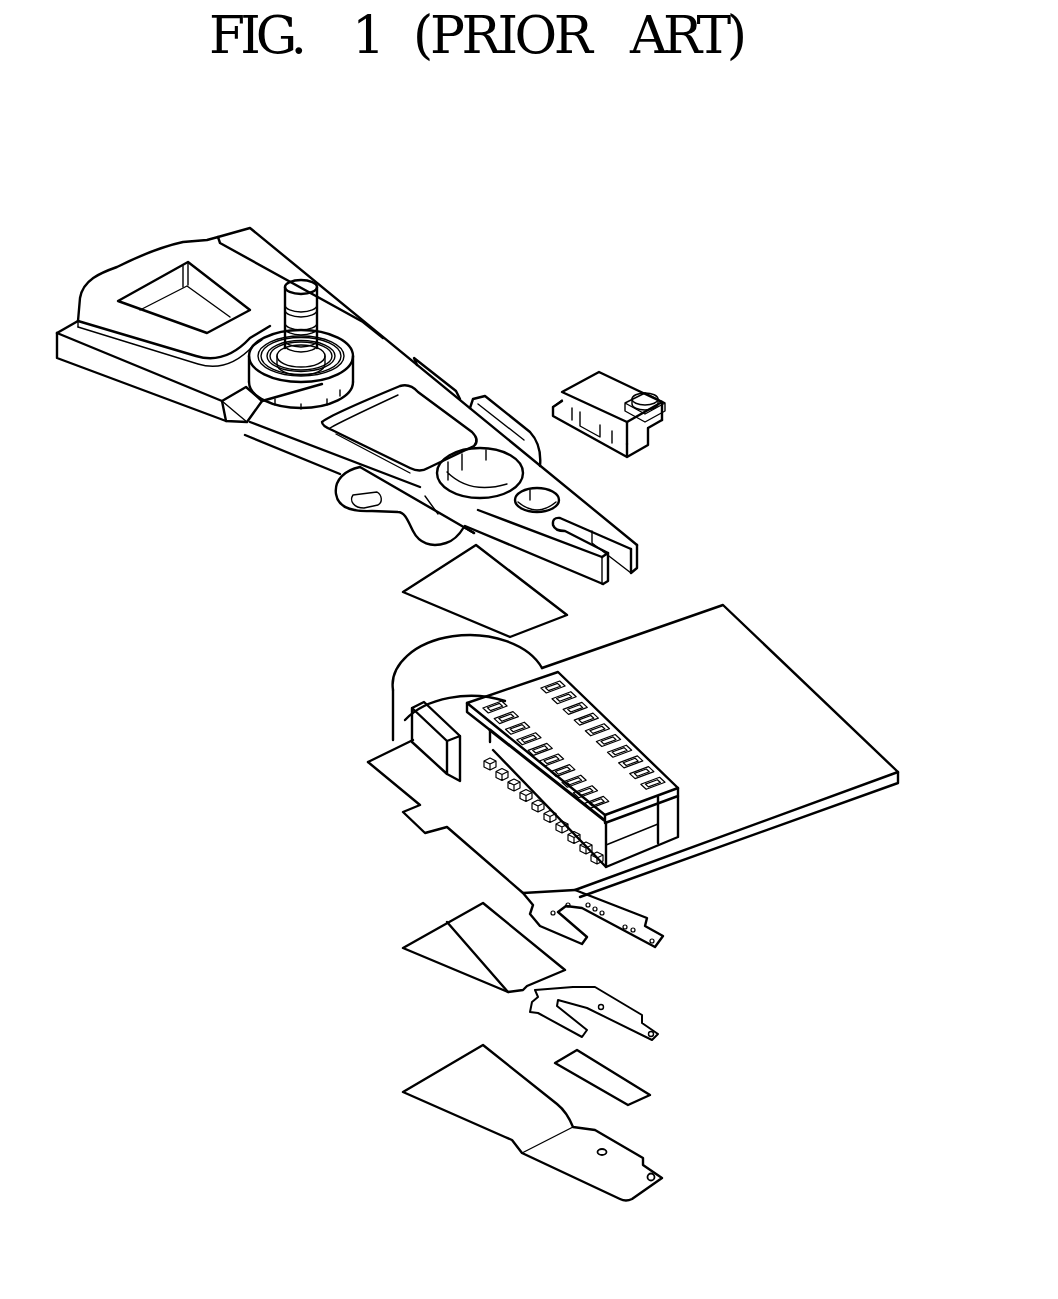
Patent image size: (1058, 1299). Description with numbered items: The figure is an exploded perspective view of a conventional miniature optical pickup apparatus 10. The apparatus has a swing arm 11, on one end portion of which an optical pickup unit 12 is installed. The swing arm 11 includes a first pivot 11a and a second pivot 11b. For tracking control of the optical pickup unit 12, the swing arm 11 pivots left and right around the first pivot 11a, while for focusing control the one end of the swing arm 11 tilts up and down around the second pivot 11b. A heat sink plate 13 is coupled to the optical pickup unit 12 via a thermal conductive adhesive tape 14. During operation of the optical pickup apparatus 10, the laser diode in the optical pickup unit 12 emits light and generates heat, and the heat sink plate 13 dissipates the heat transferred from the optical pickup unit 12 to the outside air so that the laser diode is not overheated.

The optical pickup apparatus 10 is at (626, 226).
The swing arm 11 is at (593, 515).
The first pivot 11a is at (317, 312).
The second pivot 11b is at (232, 425).
The optical pickup unit 12 is at (616, 389).
The heat sink plate 13 is at (637, 1168).
The thermal conductive adhesive tape 14 is at (625, 1085).